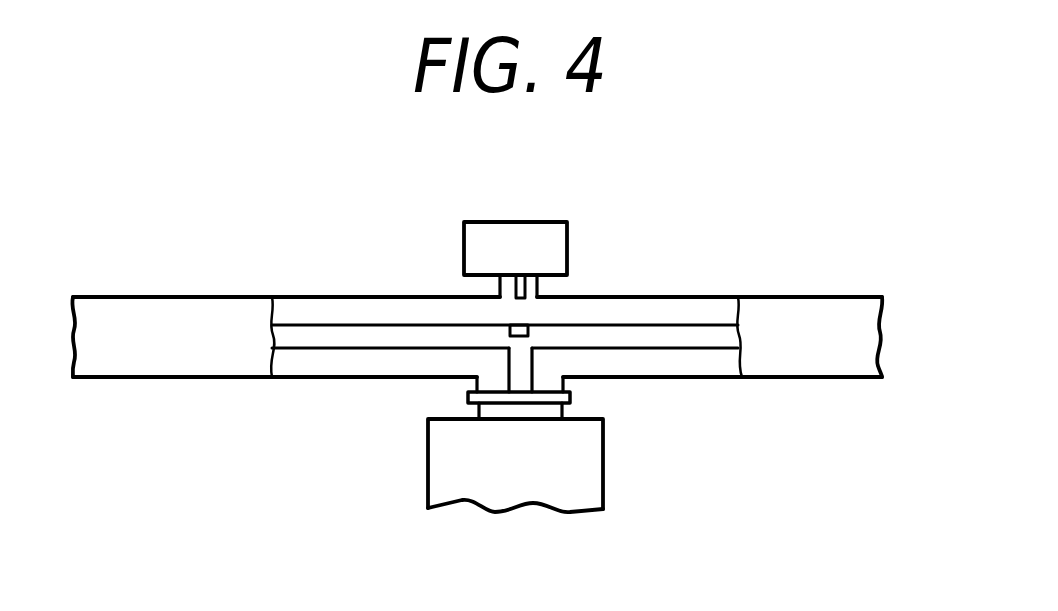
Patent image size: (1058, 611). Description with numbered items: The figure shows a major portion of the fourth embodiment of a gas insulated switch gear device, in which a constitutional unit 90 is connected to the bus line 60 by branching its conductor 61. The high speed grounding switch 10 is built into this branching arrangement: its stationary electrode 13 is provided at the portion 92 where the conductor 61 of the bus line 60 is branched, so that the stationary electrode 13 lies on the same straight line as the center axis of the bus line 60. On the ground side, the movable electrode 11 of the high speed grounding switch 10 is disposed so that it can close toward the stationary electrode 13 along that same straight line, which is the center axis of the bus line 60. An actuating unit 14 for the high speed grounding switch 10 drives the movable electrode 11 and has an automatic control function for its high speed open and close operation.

The high speed grounding switch 10 is at (516, 223).
The movable electrode 11 is at (520, 288).
The stationary electrode 13 is at (517, 333).
The actuating unit 14 is at (533, 230).
The bus line 60 is at (547, 393).
The conductor 61 is at (306, 333).
The constitutional unit 90 is at (447, 471).
The branched portion 92 is at (534, 355).